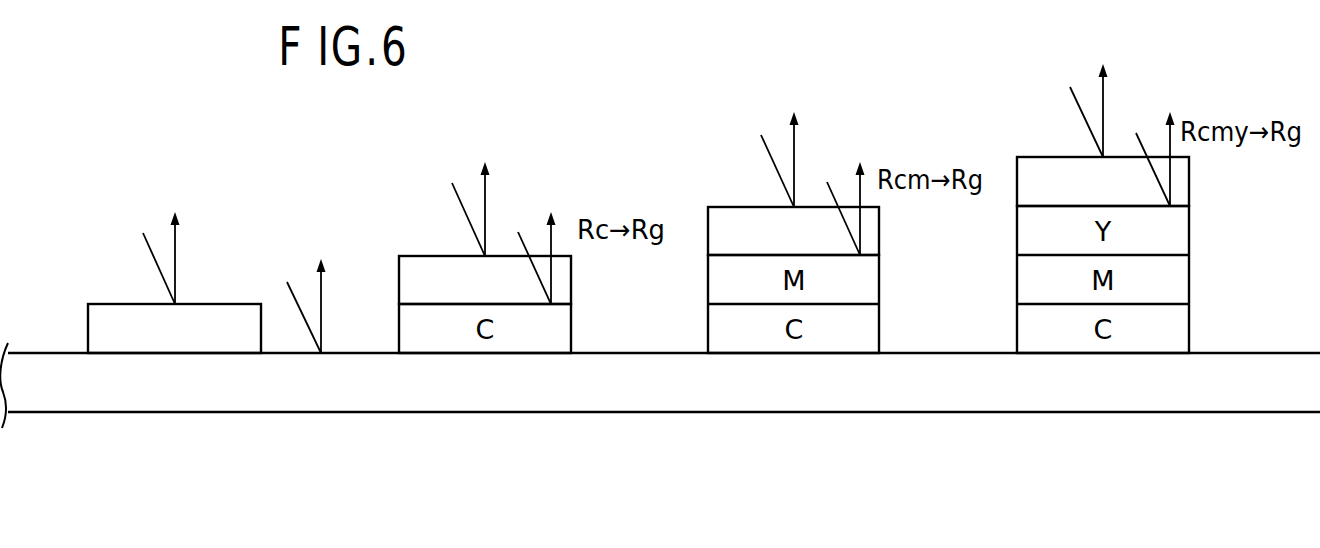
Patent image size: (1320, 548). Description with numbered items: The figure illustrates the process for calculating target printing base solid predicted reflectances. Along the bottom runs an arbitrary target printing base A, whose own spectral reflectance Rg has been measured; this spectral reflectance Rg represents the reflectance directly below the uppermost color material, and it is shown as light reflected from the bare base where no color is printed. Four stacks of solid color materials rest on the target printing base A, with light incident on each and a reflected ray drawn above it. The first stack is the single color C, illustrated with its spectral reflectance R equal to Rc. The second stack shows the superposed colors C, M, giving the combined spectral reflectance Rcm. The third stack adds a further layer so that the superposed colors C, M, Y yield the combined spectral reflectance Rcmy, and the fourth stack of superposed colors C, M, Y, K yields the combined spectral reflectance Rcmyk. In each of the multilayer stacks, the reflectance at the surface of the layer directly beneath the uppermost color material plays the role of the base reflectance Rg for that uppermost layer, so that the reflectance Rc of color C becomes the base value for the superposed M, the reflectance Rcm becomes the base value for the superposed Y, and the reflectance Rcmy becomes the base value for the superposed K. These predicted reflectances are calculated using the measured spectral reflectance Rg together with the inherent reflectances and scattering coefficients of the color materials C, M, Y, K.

The target printing base A is at (660, 385).
The color material C is at (174, 328).
The color material M is at (485, 280).
The color material Y is at (793, 231).
The color material K is at (1103, 181).
The spectral reflectance of solid color C Rc is at (217, 258).
The spectral reflectance of the target printing base Rg is at (345, 306).
The combined spectral reflectance of superposed colors C, M Rcm is at (531, 209).
The combined spectral reflectance of superposed colors C, M, Y Rcmy is at (843, 159).
The combined spectral reflectance of superposed colors C, M, Y, K Rcmyk is at (1159, 110).